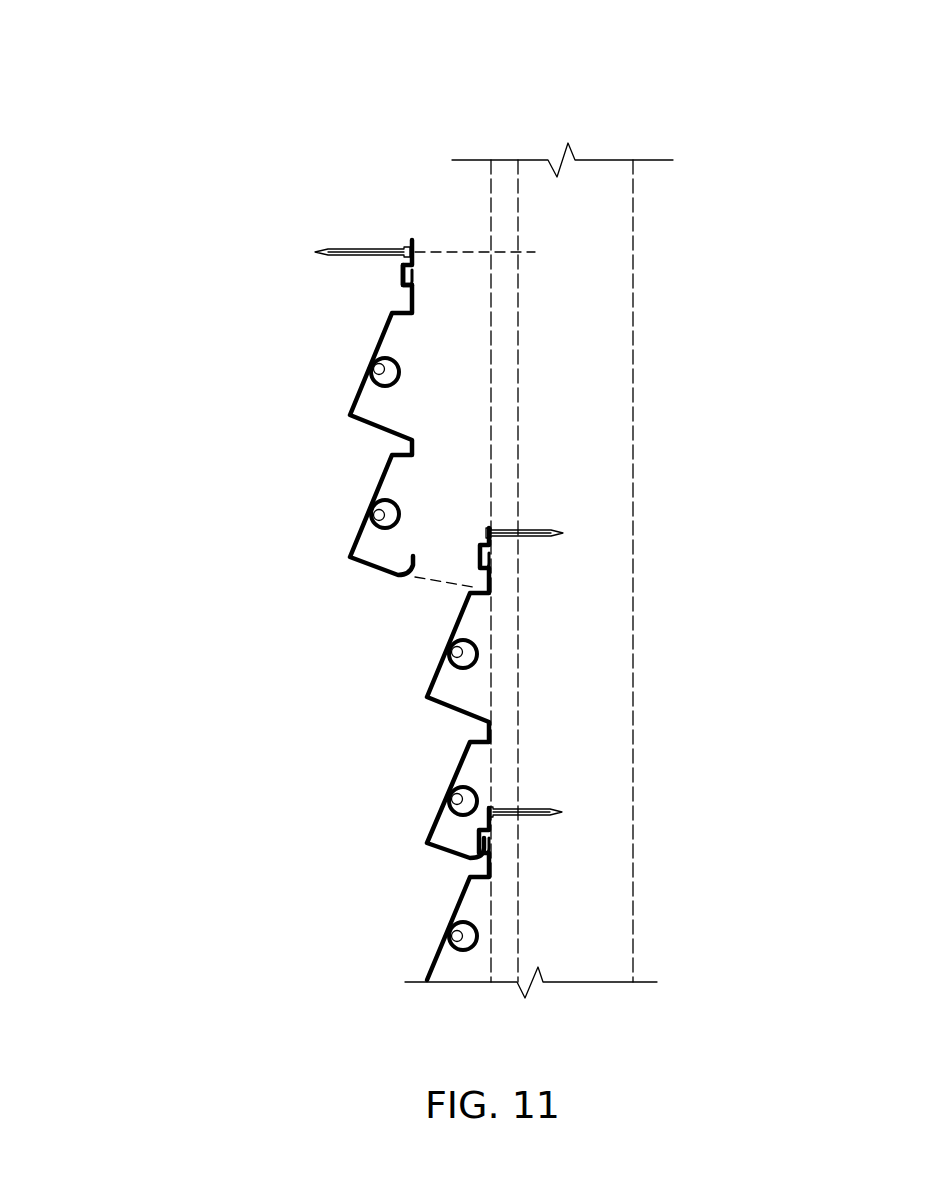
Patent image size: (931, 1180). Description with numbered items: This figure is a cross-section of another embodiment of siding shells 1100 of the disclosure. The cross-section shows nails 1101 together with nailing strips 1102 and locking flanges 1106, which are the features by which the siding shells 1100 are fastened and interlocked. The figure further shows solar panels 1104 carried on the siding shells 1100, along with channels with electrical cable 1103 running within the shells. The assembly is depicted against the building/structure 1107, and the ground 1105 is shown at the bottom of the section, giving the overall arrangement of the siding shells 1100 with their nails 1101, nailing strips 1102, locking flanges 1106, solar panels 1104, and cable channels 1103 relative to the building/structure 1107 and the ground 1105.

The siding shells 1100 is at (232, 48).
The nails 1101 is at (358, 250).
The nailing strips 1102 is at (407, 240).
The channels with electrical cable 1103 is at (403, 380).
The solar panels 1104 is at (373, 365).
The ground 1105 is at (462, 983).
The locking flanges 1106 is at (398, 277).
The building/structure 1107 is at (590, 245).